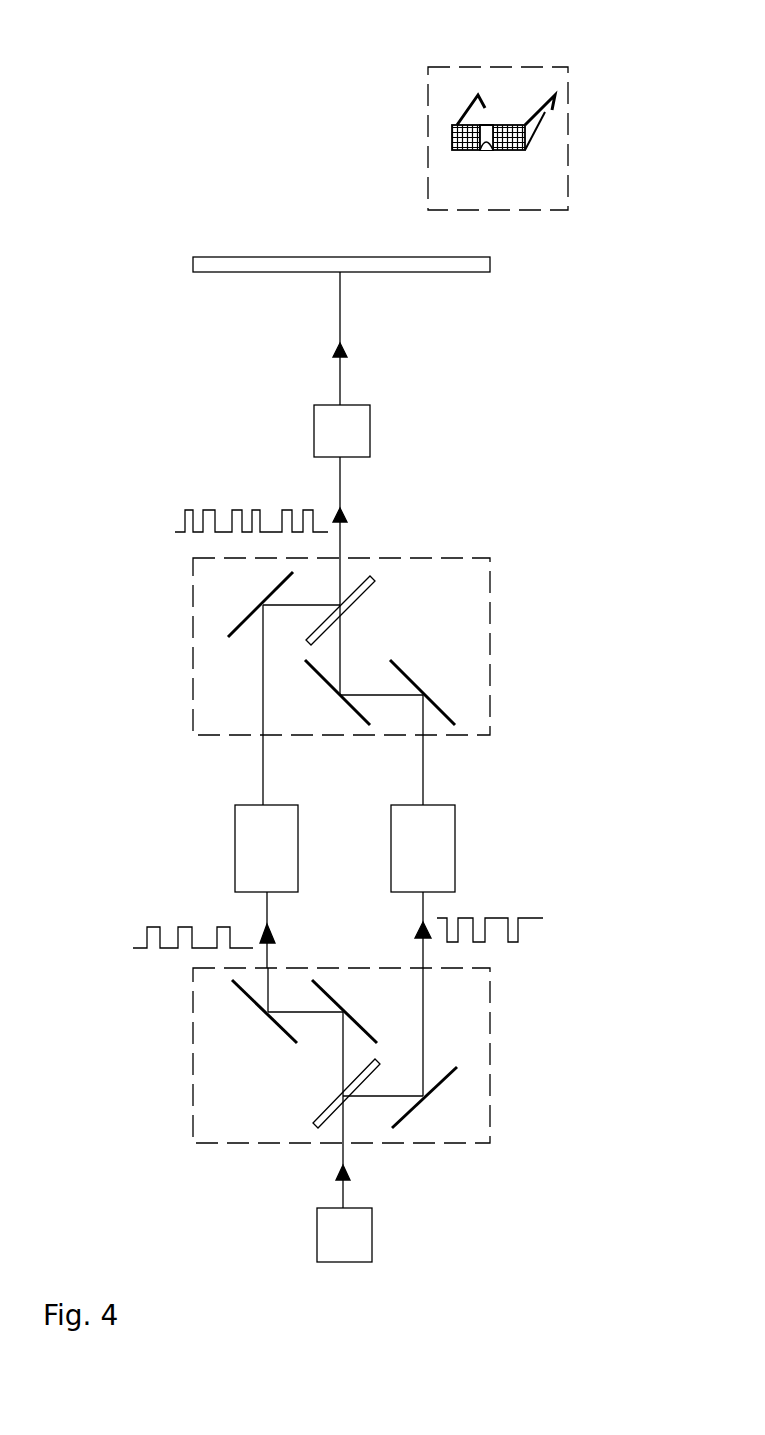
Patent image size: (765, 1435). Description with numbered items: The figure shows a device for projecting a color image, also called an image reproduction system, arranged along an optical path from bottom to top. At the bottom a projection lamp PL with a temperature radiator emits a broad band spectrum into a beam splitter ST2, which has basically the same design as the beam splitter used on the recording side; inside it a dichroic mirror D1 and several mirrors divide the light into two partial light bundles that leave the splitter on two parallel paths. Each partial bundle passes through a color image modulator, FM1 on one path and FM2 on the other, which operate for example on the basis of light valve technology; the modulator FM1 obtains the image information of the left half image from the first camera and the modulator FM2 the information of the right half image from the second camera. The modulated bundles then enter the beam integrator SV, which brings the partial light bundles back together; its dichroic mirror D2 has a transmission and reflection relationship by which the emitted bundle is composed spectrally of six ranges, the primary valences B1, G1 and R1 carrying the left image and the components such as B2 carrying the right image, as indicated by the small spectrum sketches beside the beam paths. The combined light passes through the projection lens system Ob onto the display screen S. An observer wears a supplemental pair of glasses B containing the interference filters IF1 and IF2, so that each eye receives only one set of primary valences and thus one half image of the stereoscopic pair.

The pair of glasses B is at (488, 66).
The interference filter IF1 is at (517, 141).
The interference filter IF2 is at (468, 141).
The display screen S is at (318, 270).
The projection lens system Ob is at (342, 431).
The dichroic mirror D2 is at (345, 610).
The beam integrator SV is at (490, 663).
The color image modulator FM1 is at (266, 848).
The color image modulator FM2 is at (423, 848).
The dichroic mirror D1 is at (338, 1093).
The beam splitter ST2 is at (490, 1073).
The projection lamp PL is at (344, 1235).
The blue primary valence B1 is at (193, 927).
The green primary valence G1 is at (187, 914).
The red primary valence R1 is at (223, 914).
The blue primary valence B2 is at (251, 509).